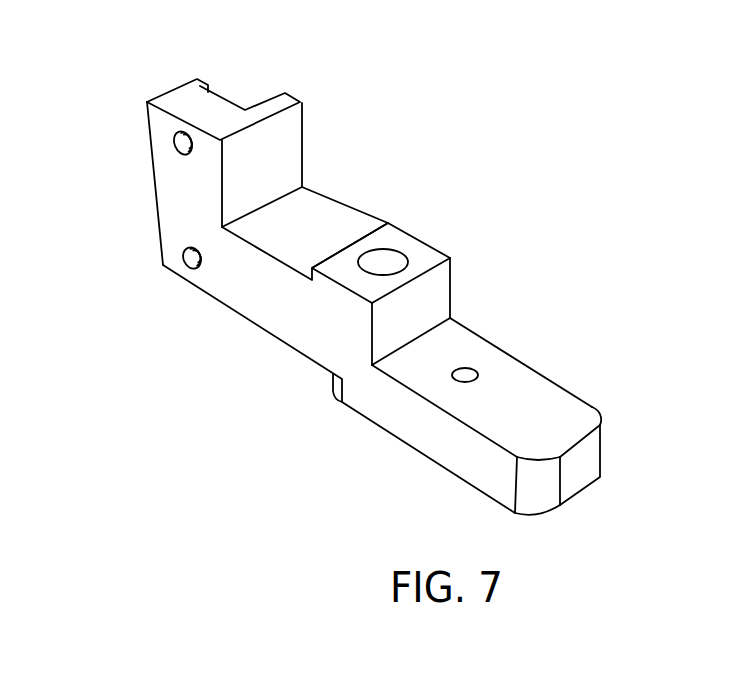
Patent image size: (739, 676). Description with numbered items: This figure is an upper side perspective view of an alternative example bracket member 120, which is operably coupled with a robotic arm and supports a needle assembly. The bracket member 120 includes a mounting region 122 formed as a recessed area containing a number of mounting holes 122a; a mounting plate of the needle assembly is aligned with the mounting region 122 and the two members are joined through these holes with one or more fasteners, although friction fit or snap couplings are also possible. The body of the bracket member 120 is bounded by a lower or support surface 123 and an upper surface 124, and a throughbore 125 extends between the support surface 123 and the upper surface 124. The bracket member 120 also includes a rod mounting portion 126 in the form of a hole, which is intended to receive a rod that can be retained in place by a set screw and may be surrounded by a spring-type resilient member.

The bracket body 120 is at (340, 335).
The upright mounting block 122 is at (237, 78).
The threaded mounting hole 122a is at (174, 142).
The curved end face 123 is at (533, 523).
The chamfered end corner 124 is at (592, 400).
The through hole 125 is at (470, 378).
The through hole 126 is at (395, 260).